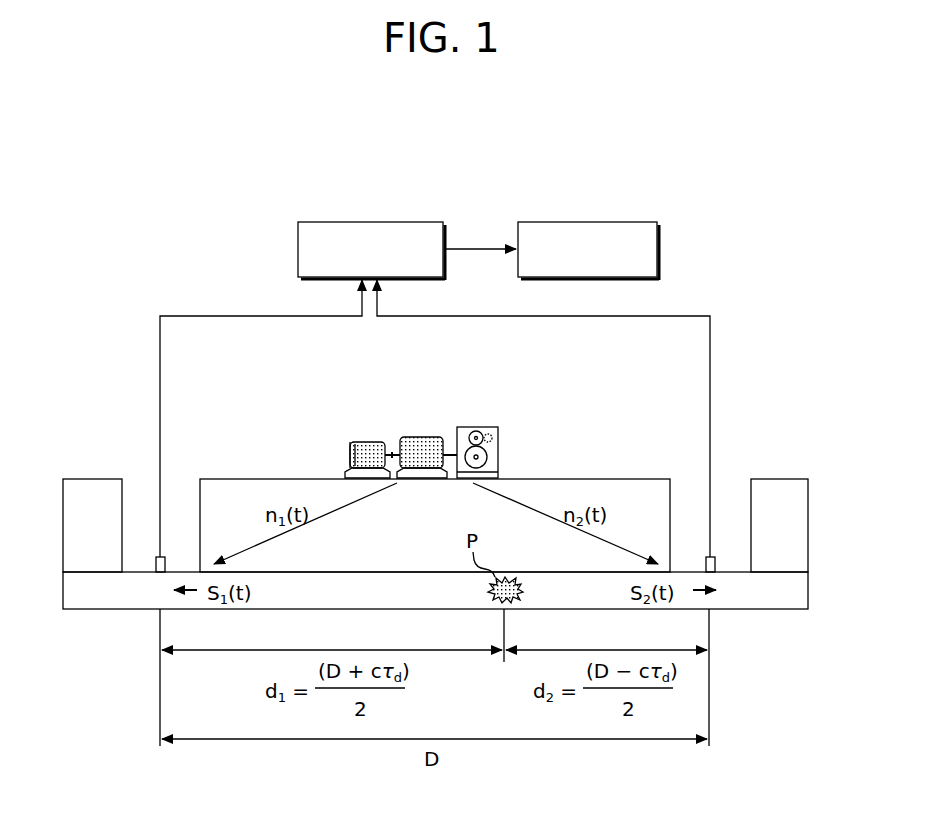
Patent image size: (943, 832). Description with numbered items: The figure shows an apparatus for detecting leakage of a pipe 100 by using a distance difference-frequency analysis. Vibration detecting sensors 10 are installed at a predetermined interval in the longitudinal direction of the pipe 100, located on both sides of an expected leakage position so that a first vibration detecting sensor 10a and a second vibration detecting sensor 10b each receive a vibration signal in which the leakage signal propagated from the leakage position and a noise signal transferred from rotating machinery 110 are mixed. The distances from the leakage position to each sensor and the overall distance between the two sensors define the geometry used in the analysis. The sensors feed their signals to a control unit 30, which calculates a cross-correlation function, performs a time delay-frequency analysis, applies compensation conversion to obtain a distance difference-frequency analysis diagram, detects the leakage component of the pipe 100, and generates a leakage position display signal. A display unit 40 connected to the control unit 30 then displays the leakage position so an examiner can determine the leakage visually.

The vibration detecting sensor 10 is at (770, 172).
The first vibration detecting sensor 10a is at (155, 566).
The second vibration detecting sensor 10b is at (716, 565).
The control unit 30 is at (298, 247).
The display unit 40 is at (659, 247).
The pipe 100 is at (790, 610).
The rotating machinery 110 is at (362, 432).